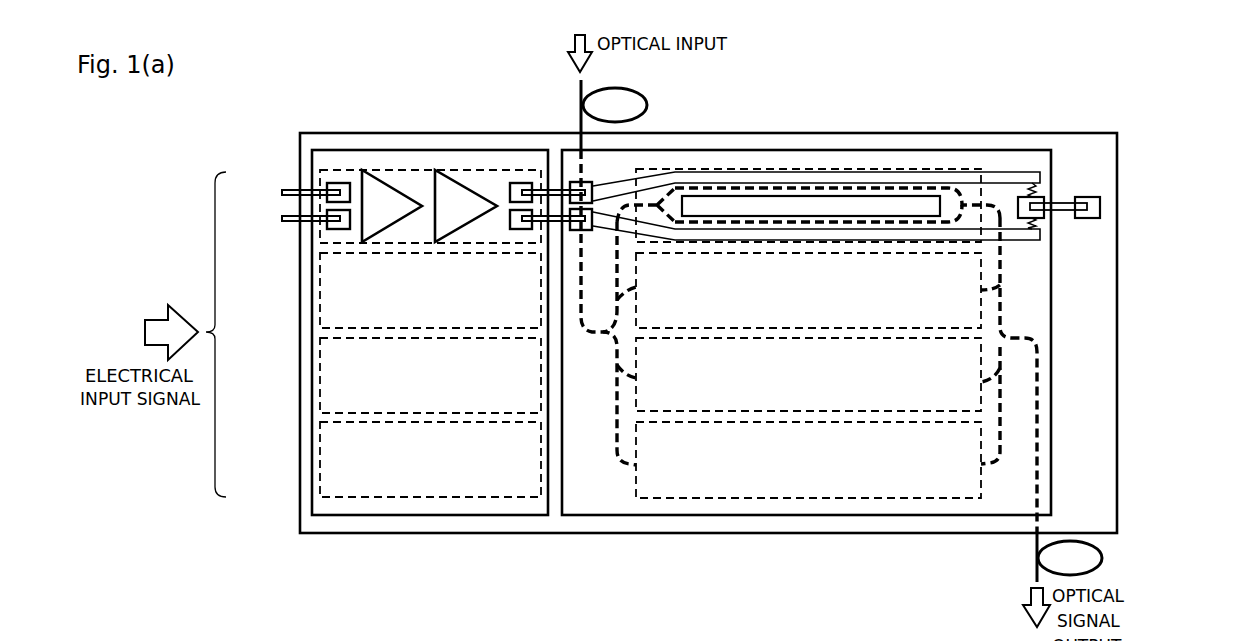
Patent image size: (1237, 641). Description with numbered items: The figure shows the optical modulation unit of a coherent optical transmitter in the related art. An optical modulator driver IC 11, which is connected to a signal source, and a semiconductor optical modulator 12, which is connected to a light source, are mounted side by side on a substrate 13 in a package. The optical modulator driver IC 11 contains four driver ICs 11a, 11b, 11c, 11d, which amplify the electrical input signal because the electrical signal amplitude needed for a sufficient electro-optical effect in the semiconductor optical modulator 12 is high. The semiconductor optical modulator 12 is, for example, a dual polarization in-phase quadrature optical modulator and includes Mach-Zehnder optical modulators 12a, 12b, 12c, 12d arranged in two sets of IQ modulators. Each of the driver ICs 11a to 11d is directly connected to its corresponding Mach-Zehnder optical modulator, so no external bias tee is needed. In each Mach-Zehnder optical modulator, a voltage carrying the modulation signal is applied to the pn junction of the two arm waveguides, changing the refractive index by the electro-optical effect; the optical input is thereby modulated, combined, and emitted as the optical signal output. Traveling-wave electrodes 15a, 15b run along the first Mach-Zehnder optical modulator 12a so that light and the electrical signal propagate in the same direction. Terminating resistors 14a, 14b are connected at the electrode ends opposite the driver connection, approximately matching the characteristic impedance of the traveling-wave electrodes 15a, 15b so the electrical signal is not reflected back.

The optical modulator driver IC 11 is at (432, 150).
The driver IC 11a is at (320, 172).
The driver IC 11b is at (320, 256).
The driver IC 11c is at (320, 340).
The driver IC 11d is at (320, 424).
The semiconductor optical modulator 12 is at (802, 148).
The Mach-Zehnder optical modulator 12a is at (975, 168).
The Mach-Zehnder optical modulator 12b is at (981, 313).
The Mach-Zehnder optical modulator 12c is at (981, 397).
The Mach-Zehnder optical modulator 12d is at (981, 482).
The substrate 13 is at (1117, 347).
The terminating resistor 14a is at (1036, 190).
The terminating resistor 14b is at (1036, 222).
The traveling-wave electrode 15a is at (1040, 176).
The traveling-wave electrode 15b is at (1040, 236).